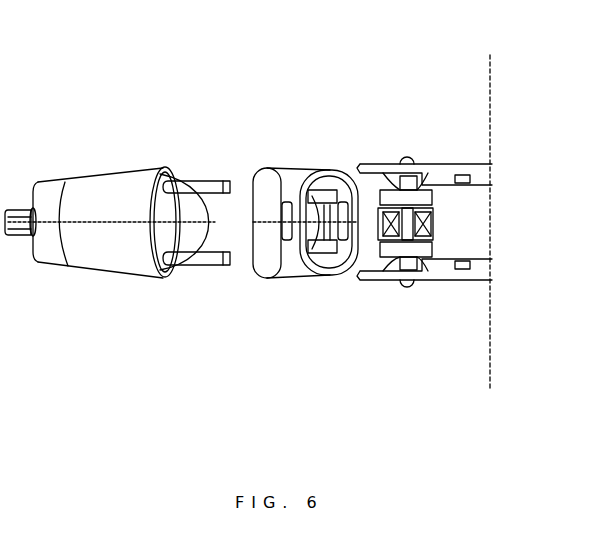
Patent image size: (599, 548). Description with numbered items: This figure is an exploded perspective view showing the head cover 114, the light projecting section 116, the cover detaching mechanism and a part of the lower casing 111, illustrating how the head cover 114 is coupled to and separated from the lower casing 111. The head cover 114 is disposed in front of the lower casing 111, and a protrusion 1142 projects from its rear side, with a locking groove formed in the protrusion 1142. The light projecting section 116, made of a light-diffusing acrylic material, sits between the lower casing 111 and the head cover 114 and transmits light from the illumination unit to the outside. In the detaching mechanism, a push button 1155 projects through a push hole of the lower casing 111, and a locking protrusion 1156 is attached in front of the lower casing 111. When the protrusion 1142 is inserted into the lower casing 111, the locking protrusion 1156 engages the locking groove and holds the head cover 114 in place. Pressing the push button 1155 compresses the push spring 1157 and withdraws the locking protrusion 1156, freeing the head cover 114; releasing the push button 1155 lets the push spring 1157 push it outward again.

The lower casing 111 is at (467, 163).
The head cover 114 is at (103, 168).
The protrusion 1142 is at (200, 168).
The light projecting section 116 is at (303, 168).
The push button 1155 is at (403, 158).
The locking protrusion 1156 is at (370, 162).
The push spring 1157 is at (430, 198).